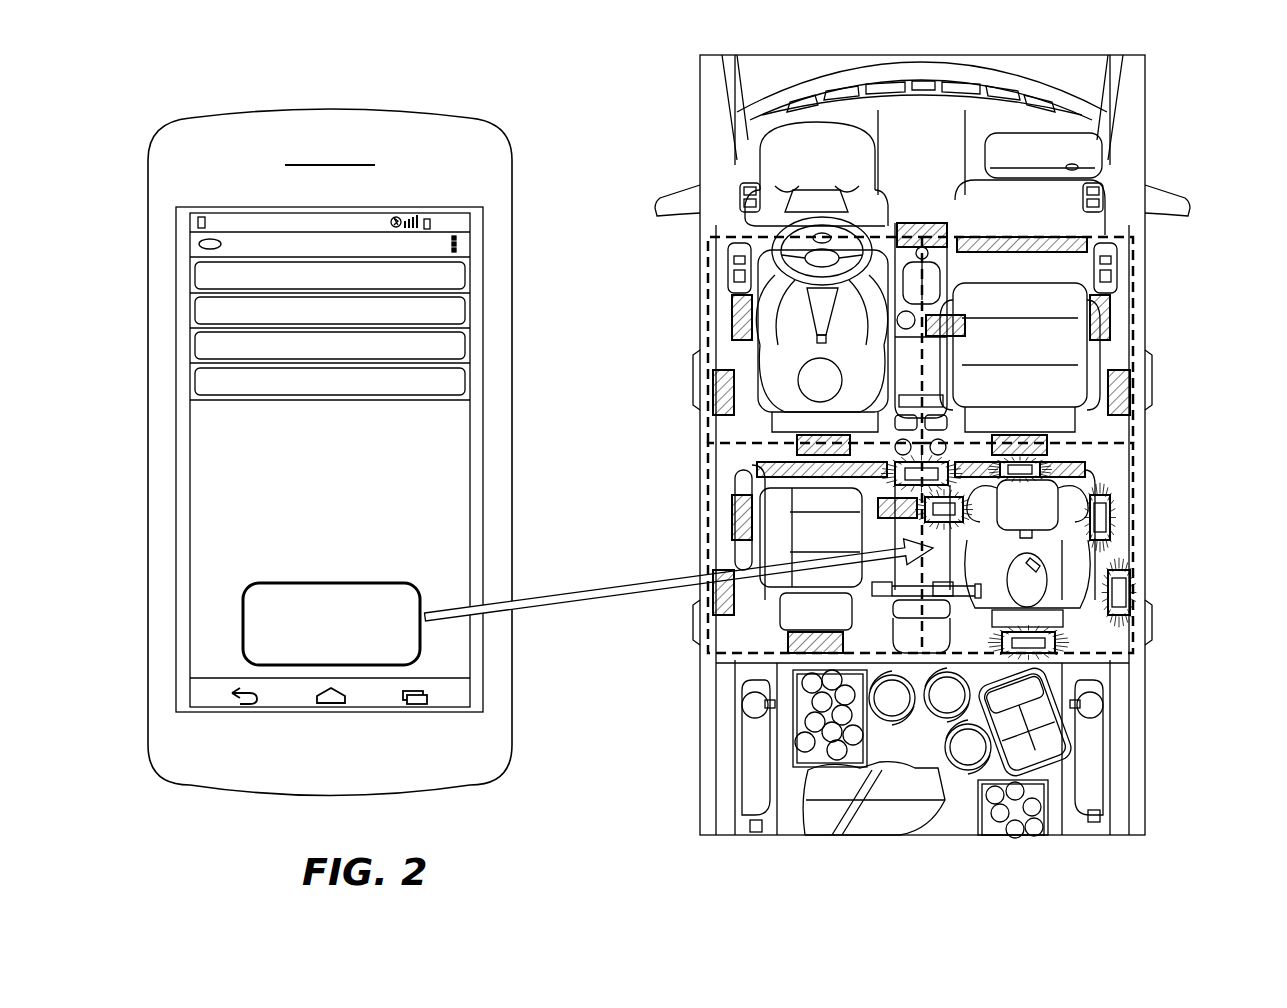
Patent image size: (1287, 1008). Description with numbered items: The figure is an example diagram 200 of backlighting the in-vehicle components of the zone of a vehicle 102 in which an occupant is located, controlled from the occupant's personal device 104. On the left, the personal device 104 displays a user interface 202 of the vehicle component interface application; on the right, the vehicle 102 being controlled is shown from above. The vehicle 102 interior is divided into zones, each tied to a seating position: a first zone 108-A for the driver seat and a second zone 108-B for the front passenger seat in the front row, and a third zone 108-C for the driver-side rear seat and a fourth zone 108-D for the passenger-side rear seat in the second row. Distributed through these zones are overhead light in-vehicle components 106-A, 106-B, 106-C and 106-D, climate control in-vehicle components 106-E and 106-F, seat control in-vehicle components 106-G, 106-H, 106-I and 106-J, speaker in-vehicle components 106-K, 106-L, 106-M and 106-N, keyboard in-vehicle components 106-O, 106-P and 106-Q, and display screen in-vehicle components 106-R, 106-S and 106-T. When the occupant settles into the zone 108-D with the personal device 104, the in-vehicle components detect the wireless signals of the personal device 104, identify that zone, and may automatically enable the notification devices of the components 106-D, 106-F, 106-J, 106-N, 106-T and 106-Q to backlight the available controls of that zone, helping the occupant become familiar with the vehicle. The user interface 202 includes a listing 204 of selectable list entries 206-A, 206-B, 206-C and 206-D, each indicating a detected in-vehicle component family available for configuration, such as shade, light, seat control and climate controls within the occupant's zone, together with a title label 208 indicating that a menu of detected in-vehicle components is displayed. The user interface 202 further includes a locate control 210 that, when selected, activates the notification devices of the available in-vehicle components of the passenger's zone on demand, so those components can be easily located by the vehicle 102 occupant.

The diagram 200 is at (230, 36).
The vehicle 102 is at (700, 113).
The personal device 104 is at (195, 118).
The user interface 202 is at (176, 650).
The listing 204 is at (170, 393).
The selectable list entry 206-A is at (465, 272).
The selectable list entry 206-B is at (465, 306).
The selectable list entry 206-C is at (465, 343).
The selectable list entry 206-D is at (465, 380).
The title label 208 is at (185, 246).
The locate control 210 is at (243, 622).
The first zone 108-A is at (708, 288).
The second zone 108-B is at (1135, 287).
The third zone 108-C is at (708, 480).
The fourth zone 108-D is at (1135, 480).
The overhead light in-vehicle component 106-A is at (713, 405).
The overhead light in-vehicle component 106-B is at (713, 585).
The overhead light in-vehicle component 106-C is at (1130, 410).
The overhead light in-vehicle component 106-D is at (1130, 600).
The climate control in-vehicle component 106-E is at (927, 223).
The climate control in-vehicle component 106-F is at (903, 440).
The seat control in-vehicle component 106-G is at (732, 332).
The seat control in-vehicle component 106-H is at (732, 520).
The seat control in-vehicle component 106-I is at (1113, 322).
The seat control in-vehicle component 106-J is at (1113, 525).
The speaker in-vehicle component 106-K is at (818, 435).
The speaker in-vehicle component 106-L is at (820, 630).
The speaker in-vehicle component 106-M is at (1005, 435).
The speaker in-vehicle component 106-N is at (1006, 632).
The keyboard in-vehicle component 106-O is at (966, 320).
The keyboard in-vehicle component 106-P is at (893, 485).
The keyboard in-vehicle component 106-Q is at (958, 521).
The display screen in-vehicle component 106-R is at (1037, 237).
The display screen in-vehicle component 106-S is at (810, 478).
The display screen in-vehicle component 106-T is at (1047, 443).